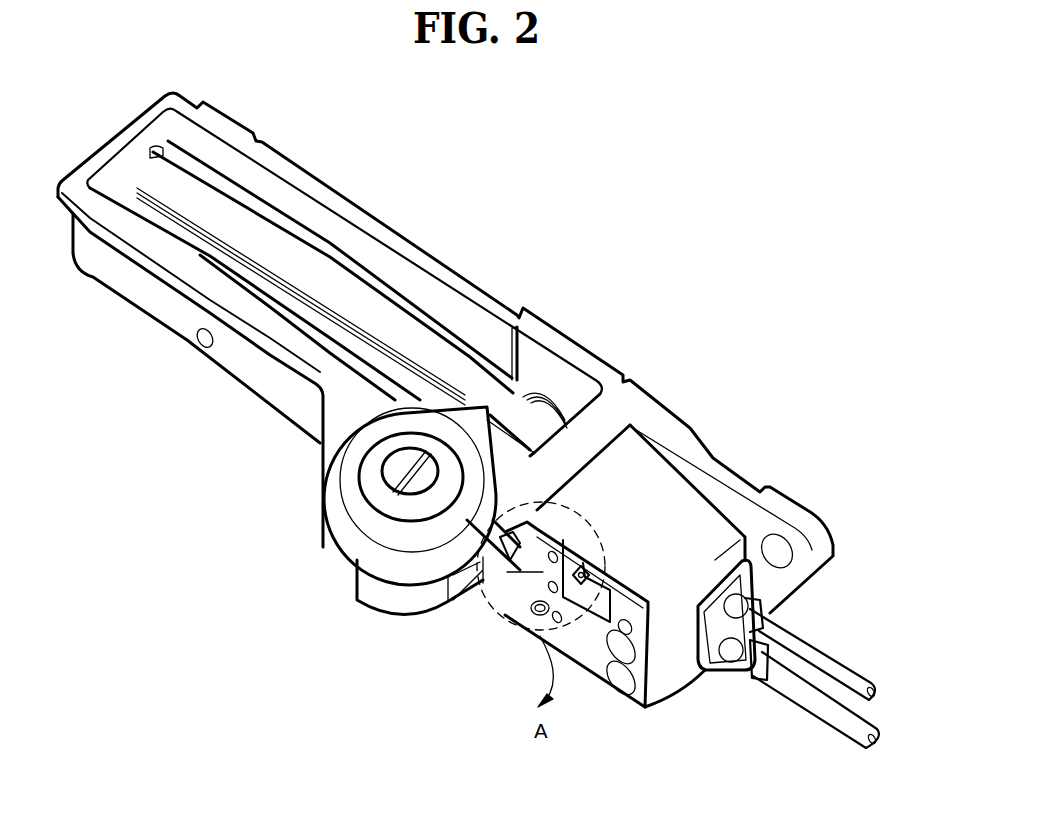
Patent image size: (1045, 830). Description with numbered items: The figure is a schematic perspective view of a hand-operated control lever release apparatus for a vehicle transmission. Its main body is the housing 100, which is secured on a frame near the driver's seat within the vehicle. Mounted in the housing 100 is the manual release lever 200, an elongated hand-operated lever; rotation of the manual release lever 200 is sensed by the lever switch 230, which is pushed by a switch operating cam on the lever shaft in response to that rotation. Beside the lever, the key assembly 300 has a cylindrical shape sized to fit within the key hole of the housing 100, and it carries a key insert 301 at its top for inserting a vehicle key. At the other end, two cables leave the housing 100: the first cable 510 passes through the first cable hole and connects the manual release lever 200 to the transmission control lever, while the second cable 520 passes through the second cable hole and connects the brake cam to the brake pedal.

The housing 100 is at (548, 312).
The manual release lever 200 is at (338, 298).
The lever switch 230 is at (510, 594).
The key assembly 300 is at (373, 483).
The key insert 301 is at (402, 482).
The first cable 510 is at (796, 705).
The second cable 520 is at (825, 650).